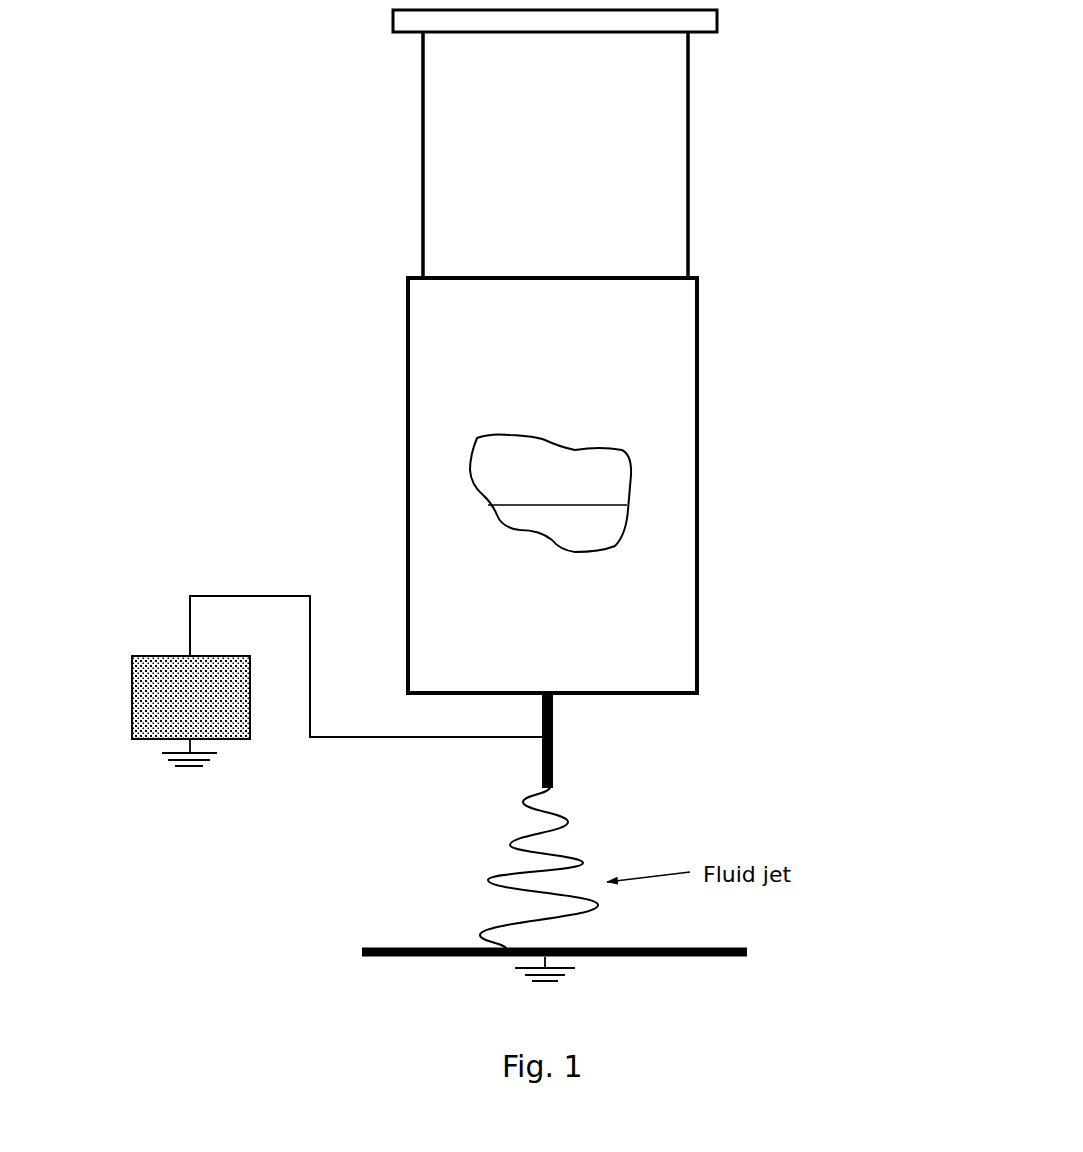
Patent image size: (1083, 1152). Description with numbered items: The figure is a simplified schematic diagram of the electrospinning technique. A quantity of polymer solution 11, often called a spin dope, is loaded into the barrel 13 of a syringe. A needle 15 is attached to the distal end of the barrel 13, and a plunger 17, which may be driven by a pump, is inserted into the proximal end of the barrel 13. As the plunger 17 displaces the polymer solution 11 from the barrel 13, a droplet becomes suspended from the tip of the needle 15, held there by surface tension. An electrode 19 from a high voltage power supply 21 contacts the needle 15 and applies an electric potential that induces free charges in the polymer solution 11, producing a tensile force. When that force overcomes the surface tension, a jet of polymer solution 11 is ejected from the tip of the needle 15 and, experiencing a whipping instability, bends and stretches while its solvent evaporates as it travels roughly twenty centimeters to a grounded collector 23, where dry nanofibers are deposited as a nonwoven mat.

The polymer solution 11 is at (588, 513).
The barrel 13 is at (705, 517).
The needle 15 is at (560, 753).
The plunger 17 is at (593, 150).
The electrode 19 is at (298, 573).
The high voltage power supply 21 is at (142, 742).
The grounded collector 23 is at (353, 953).